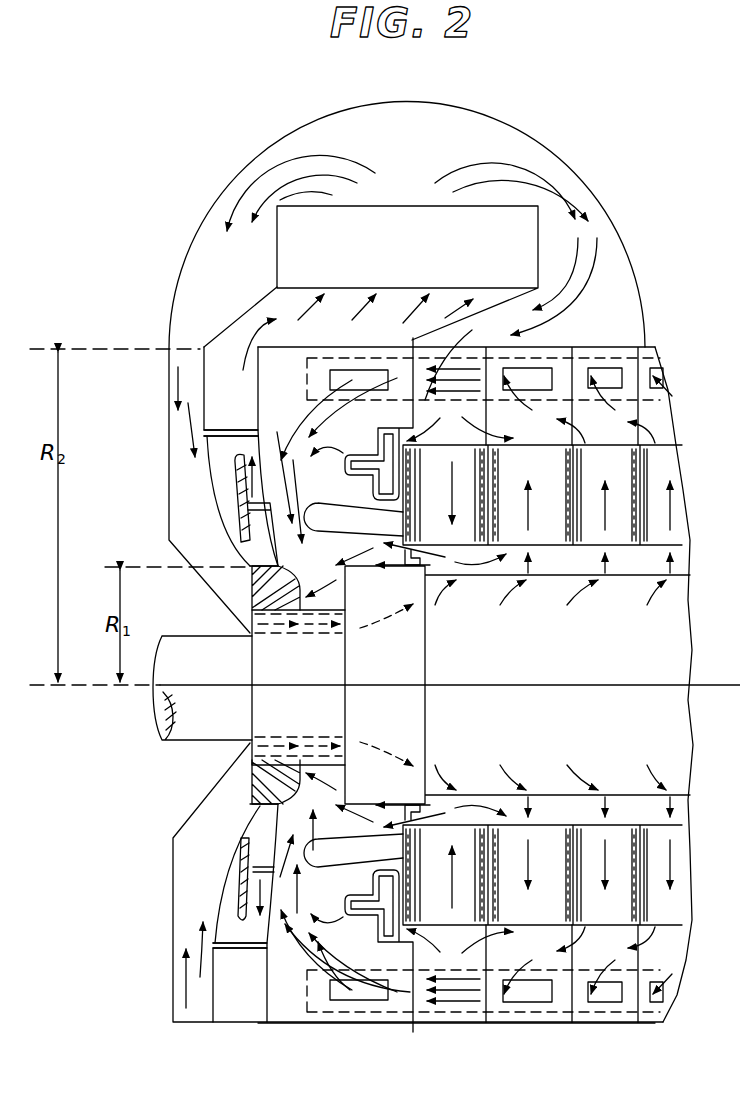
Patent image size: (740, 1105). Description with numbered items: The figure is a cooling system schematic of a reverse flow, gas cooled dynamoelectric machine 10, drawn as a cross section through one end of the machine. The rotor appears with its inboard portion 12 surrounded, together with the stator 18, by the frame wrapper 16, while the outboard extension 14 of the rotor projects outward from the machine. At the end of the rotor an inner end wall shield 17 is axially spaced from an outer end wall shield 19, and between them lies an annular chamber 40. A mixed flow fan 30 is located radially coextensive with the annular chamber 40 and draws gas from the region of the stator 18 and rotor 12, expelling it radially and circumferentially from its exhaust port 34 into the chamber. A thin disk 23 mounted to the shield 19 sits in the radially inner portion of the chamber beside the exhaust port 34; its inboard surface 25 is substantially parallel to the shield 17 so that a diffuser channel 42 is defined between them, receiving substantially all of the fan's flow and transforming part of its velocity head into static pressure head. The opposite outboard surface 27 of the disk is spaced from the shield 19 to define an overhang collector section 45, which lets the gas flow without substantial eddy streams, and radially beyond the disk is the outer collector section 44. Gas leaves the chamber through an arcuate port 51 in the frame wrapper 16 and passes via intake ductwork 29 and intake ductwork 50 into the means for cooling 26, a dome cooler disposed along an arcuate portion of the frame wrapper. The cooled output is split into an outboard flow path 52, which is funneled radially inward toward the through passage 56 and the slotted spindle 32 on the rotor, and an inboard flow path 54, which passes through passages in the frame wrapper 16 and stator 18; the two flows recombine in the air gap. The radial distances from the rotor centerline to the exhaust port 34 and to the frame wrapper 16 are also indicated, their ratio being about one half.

The dynamoelectric machine 10 is at (677, 337).
The inboard portion of the rotor 12 is at (545, 651).
The outboard extension of the rotor 14 is at (201, 671).
The frame wrapper 16 is at (588, 343).
The inner end wall shield 17 is at (262, 418).
The stator 18 is at (517, 474).
The outer end wall shield 19 is at (205, 430).
The disk 23 is at (238, 520).
The inboard surface 25 is at (275, 497).
The means for cooling 26 is at (389, 261).
The outboard surface 27 is at (235, 468).
The intake ductwork 29 is at (245, 318).
The fan 30 is at (300, 590).
The slotted spindle 32 is at (250, 622).
The exhaust port 34 is at (258, 590).
The annular chamber 40 is at (229, 424).
The diffuser channel 42 is at (251, 548).
The outer collector section 44 is at (211, 391).
The overhang collector section 45 is at (217, 498).
The intake ductwork 50 is at (314, 336).
The arcuate port 51 is at (217, 356).
The outboard flow path 52 is at (204, 283).
The inboard flow path 54 is at (596, 303).
The through passage 56 is at (182, 521).